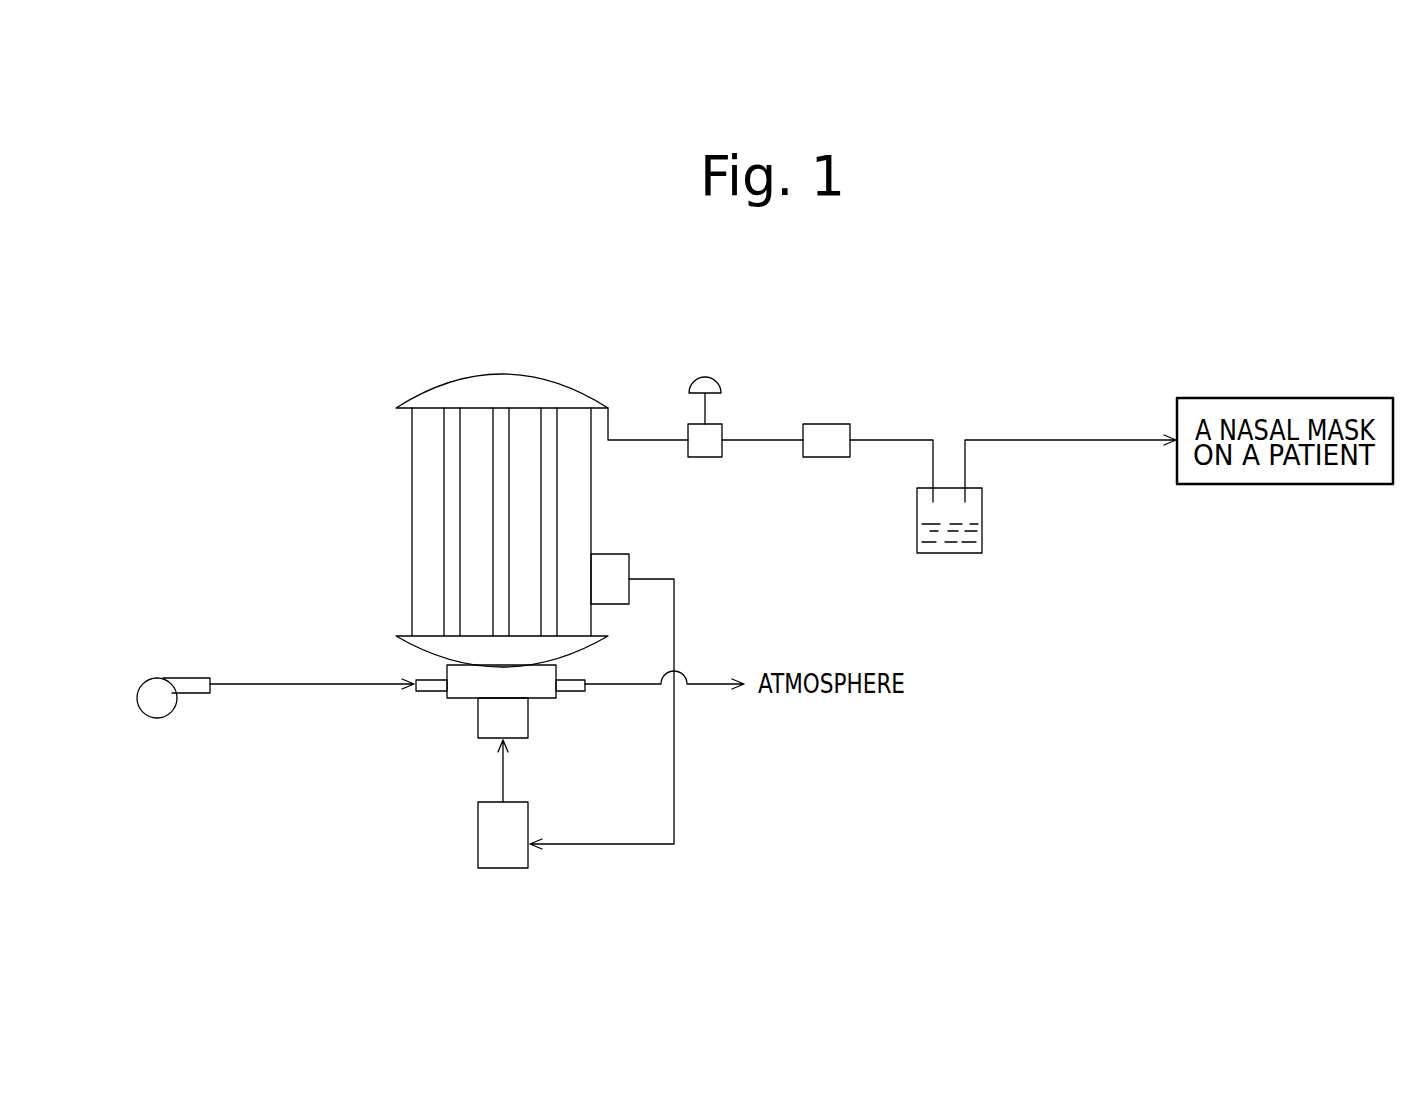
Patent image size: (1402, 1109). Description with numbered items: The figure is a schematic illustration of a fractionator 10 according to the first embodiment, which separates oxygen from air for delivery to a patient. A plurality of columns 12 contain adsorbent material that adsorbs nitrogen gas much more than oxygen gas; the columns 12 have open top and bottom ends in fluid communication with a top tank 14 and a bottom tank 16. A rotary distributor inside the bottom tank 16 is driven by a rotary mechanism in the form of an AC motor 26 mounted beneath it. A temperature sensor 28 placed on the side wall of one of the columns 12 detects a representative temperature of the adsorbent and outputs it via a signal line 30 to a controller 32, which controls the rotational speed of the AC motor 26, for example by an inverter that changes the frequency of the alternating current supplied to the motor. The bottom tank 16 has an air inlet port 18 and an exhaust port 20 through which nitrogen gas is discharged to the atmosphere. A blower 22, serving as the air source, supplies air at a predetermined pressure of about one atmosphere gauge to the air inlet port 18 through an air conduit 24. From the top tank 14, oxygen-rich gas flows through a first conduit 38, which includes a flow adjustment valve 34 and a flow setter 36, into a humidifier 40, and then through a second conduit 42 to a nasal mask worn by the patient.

The fractionator 10 is at (593, 321).
The columns 12 is at (475, 498).
The top tank 14 is at (470, 385).
The bottom tank 16 is at (412, 645).
The air inlet port 18 is at (432, 694).
The exhaust port 20 is at (572, 696).
The blower 22 is at (158, 718).
The air conduit 24 is at (292, 686).
The AC motor 26 is at (477, 727).
The temperature sensor 28 is at (619, 553).
The signal line 30 is at (674, 812).
The controller 32 is at (505, 868).
The flow adjustment valve 34 is at (712, 375).
The flow setter 36 is at (828, 423).
The first conduit 38 is at (893, 440).
The humidifier 40 is at (952, 555).
The second conduit 42 is at (1083, 442).